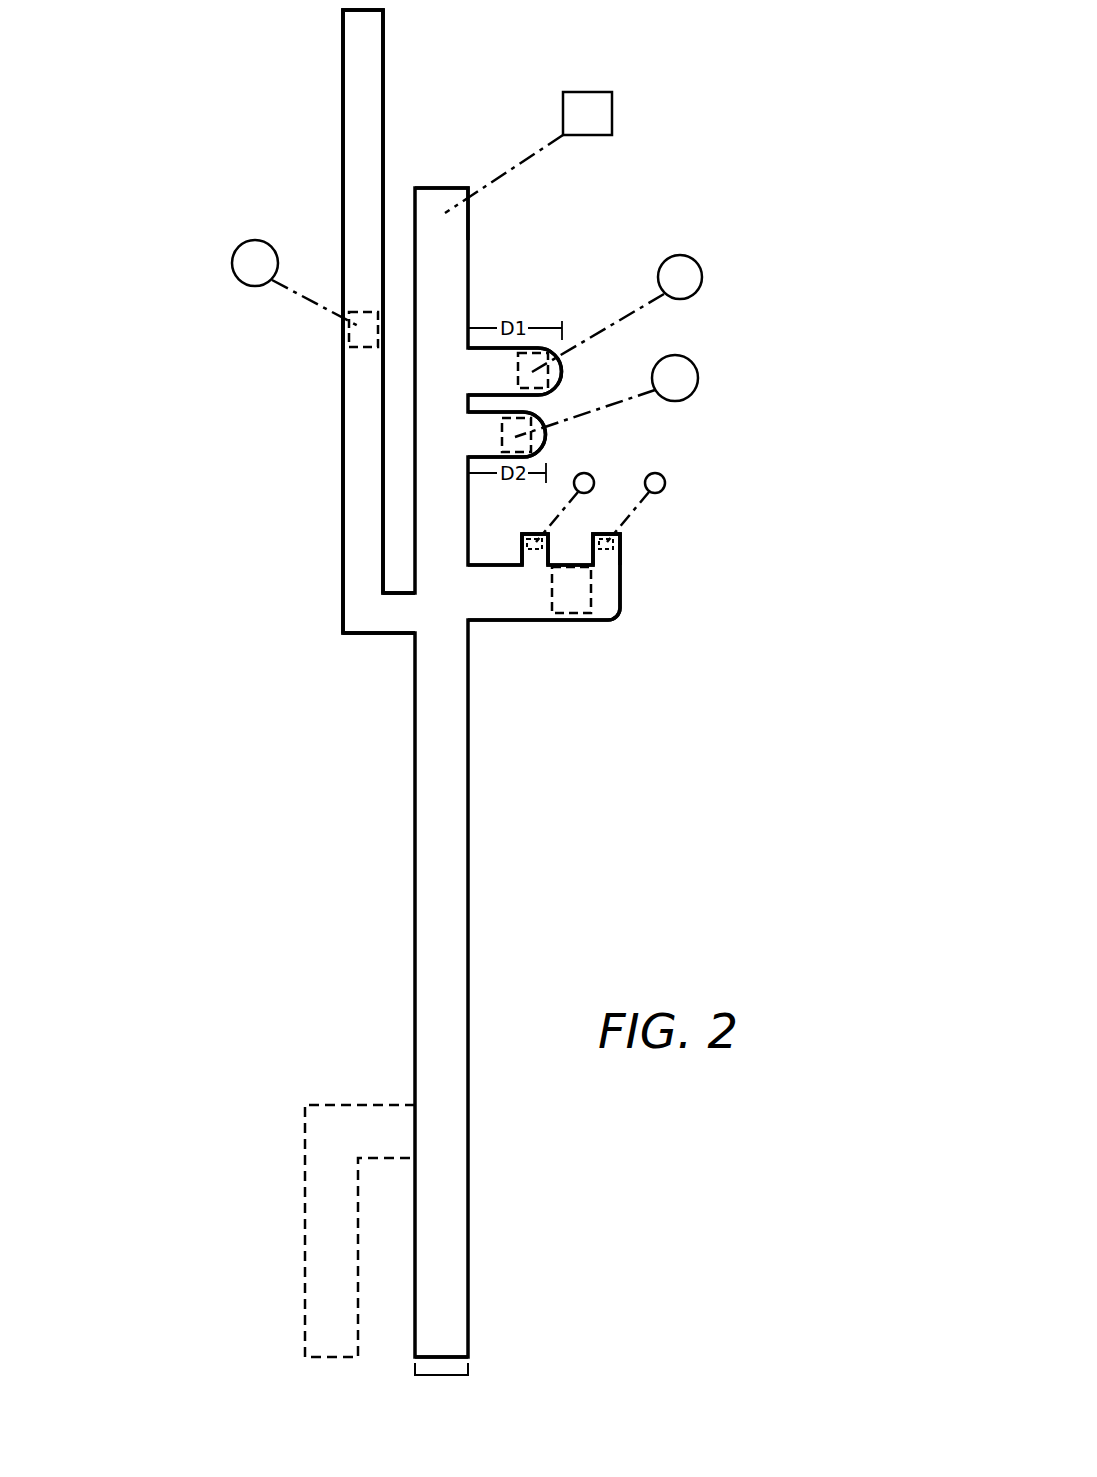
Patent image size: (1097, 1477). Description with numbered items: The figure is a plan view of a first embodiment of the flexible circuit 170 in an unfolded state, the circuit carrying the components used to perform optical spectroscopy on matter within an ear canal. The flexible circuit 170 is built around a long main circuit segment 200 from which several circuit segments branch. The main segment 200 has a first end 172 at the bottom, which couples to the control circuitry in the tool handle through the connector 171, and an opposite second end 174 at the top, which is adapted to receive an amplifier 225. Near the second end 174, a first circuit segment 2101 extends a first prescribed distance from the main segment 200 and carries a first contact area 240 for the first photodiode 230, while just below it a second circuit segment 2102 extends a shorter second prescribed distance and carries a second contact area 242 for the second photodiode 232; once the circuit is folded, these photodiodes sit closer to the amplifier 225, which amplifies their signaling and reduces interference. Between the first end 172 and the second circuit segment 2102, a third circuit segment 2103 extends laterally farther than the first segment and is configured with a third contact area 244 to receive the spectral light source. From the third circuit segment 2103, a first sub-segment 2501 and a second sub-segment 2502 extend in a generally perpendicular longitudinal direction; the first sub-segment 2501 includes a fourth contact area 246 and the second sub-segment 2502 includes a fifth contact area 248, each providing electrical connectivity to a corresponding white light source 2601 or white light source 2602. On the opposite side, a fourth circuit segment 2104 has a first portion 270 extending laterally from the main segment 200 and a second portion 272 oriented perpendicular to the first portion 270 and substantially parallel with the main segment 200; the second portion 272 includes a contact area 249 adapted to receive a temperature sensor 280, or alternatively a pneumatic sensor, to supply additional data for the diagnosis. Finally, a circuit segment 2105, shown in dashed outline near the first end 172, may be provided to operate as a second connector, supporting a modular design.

The flexible circuit 170 is at (388, 912).
The connector 171 is at (468, 1375).
The first end 172 is at (453, 1342).
The second end 174 is at (482, 213).
The main circuit segment 200 is at (468, 975).
The first circuit segment 2101 is at (478, 345).
The second circuit segment 2102 is at (488, 458).
The third circuit segment 2103 is at (620, 598).
The fourth circuit segment 2104 is at (341, 420).
The circuit segment 2105 is at (348, 1105).
The amplifier 225 is at (600, 108).
The first photodiode 230 is at (702, 272).
The second photodiode 232 is at (698, 373).
The first contact area 240 is at (525, 356).
The second contact area 242 is at (503, 437).
The third contact area 244 is at (563, 592).
The fourth contact area 246 is at (538, 552).
The fifth contact area 248 is at (603, 550).
The contact area 249 is at (355, 337).
The first sub-segment 2501 is at (527, 545).
The second sub-segment 2502 is at (620, 545).
The white light source 2601 is at (591, 476).
The white light source 2602 is at (665, 483).
The first portion 270 is at (388, 635).
The second portion 272 is at (343, 82).
The temperature sensor 280 is at (242, 248).